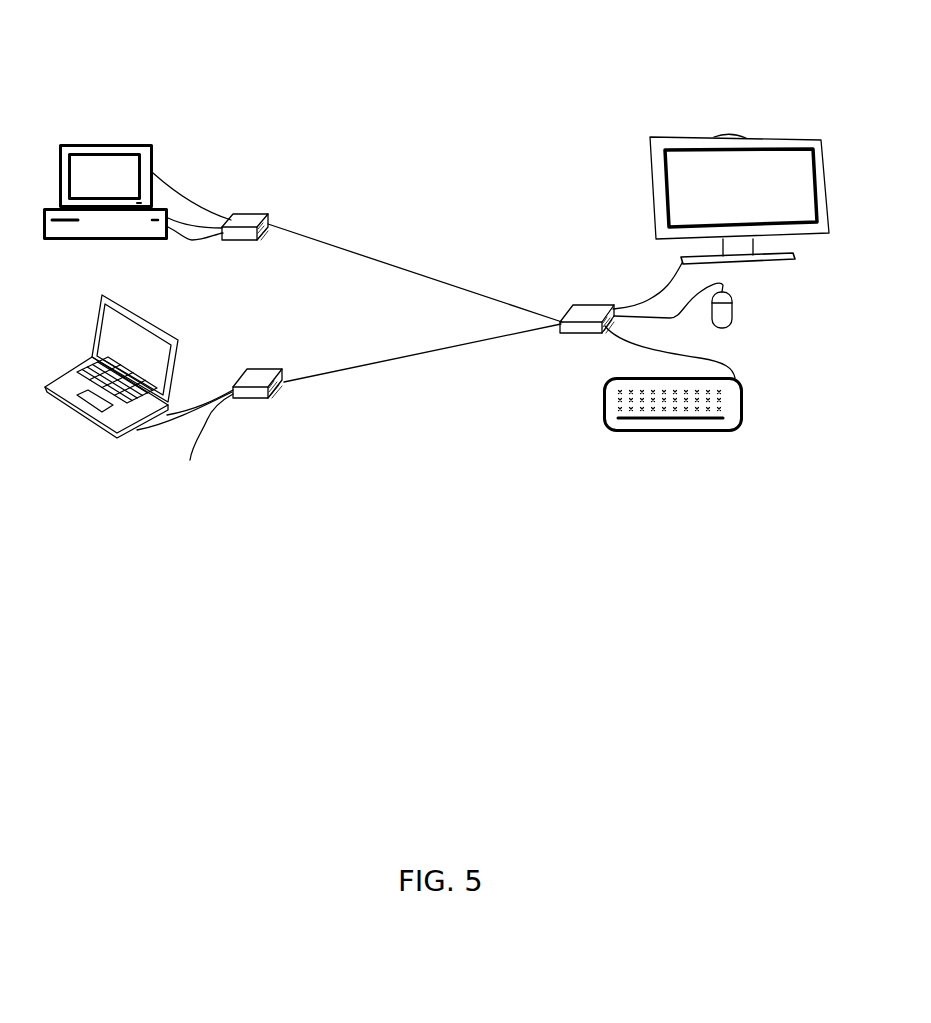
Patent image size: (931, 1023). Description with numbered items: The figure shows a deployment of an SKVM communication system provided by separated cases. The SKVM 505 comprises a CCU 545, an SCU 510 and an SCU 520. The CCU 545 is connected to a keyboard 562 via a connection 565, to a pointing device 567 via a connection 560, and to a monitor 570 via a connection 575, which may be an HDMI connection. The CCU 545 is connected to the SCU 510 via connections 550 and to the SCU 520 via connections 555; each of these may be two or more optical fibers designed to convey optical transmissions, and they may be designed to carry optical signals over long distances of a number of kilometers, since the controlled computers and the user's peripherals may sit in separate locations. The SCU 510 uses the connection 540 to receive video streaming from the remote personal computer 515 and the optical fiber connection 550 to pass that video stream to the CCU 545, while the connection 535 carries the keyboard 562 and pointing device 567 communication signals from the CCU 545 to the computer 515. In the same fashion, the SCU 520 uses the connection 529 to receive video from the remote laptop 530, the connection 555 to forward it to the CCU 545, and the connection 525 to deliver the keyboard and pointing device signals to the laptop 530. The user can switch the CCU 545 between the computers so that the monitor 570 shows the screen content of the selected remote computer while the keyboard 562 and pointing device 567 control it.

The SKVM 505 is at (407, 77).
The SCU 510 is at (258, 214).
The remote personal computer 515 is at (142, 142).
The SCU 520 is at (248, 369).
The connection 525 is at (147, 432).
The connection 529 is at (210, 437).
The remote laptop 530 is at (92, 425).
The connection 535 is at (190, 240).
The connection 540 is at (170, 178).
The CCU 545 is at (583, 305).
The optical fiber connection 550 is at (444, 281).
The optical fiber connection 555 is at (431, 352).
The connection 560 is at (673, 322).
The keyboard 562 is at (668, 430).
The connection 565 is at (633, 340).
The pointing device 567 is at (733, 303).
The monitor 570 is at (657, 188).
The connection 575 is at (660, 283).